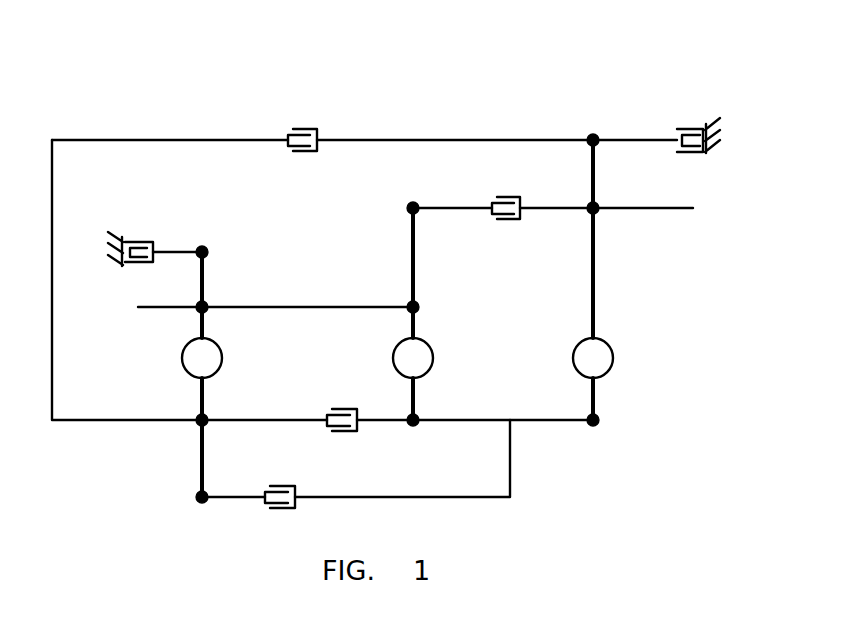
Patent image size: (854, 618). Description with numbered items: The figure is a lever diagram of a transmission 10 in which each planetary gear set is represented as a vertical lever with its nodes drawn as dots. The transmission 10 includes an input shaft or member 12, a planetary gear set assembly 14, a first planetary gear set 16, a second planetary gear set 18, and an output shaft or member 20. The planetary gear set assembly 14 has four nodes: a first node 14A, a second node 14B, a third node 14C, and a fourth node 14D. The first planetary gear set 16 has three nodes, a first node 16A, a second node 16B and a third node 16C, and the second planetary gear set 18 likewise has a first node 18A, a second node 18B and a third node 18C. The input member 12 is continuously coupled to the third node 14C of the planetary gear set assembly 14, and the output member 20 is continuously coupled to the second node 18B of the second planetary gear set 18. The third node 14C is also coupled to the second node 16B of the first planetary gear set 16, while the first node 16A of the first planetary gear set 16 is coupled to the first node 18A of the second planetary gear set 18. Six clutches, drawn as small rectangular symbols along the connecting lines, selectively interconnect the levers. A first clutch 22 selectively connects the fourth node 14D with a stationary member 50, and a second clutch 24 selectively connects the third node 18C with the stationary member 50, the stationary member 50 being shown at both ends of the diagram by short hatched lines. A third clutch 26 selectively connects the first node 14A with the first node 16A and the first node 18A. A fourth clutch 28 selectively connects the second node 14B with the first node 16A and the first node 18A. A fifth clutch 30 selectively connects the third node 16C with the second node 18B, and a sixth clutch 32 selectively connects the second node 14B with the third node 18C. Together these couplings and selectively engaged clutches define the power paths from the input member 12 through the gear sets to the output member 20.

The transmission 10 is at (621, 83).
The input shaft or member 12 is at (163, 310).
The planetary gear set assembly 14 is at (206, 509).
The first node 14A is at (197, 498).
The second node 14B is at (200, 426).
The third node 14C is at (207, 312).
The fourth node 14D is at (203, 247).
The first planetary gear set 16 is at (426, 465).
The first node 16A is at (415, 427).
The second node 16B is at (418, 305).
The third node 16C is at (410, 203).
The second planetary gear set 18 is at (594, 438).
The first node 18A is at (598, 420).
The second node 18B is at (590, 213).
The third node 18C is at (592, 135).
The output shaft or member 20 is at (672, 210).
The first clutch 22 is at (140, 241).
The second clutch 24 is at (686, 153).
The third clutch 26 is at (279, 486).
The fourth clutch 28 is at (341, 408).
The fifth clutch 30 is at (511, 196).
The sixth clutch 32 is at (300, 127).
The stationary member 50 is at (112, 270).